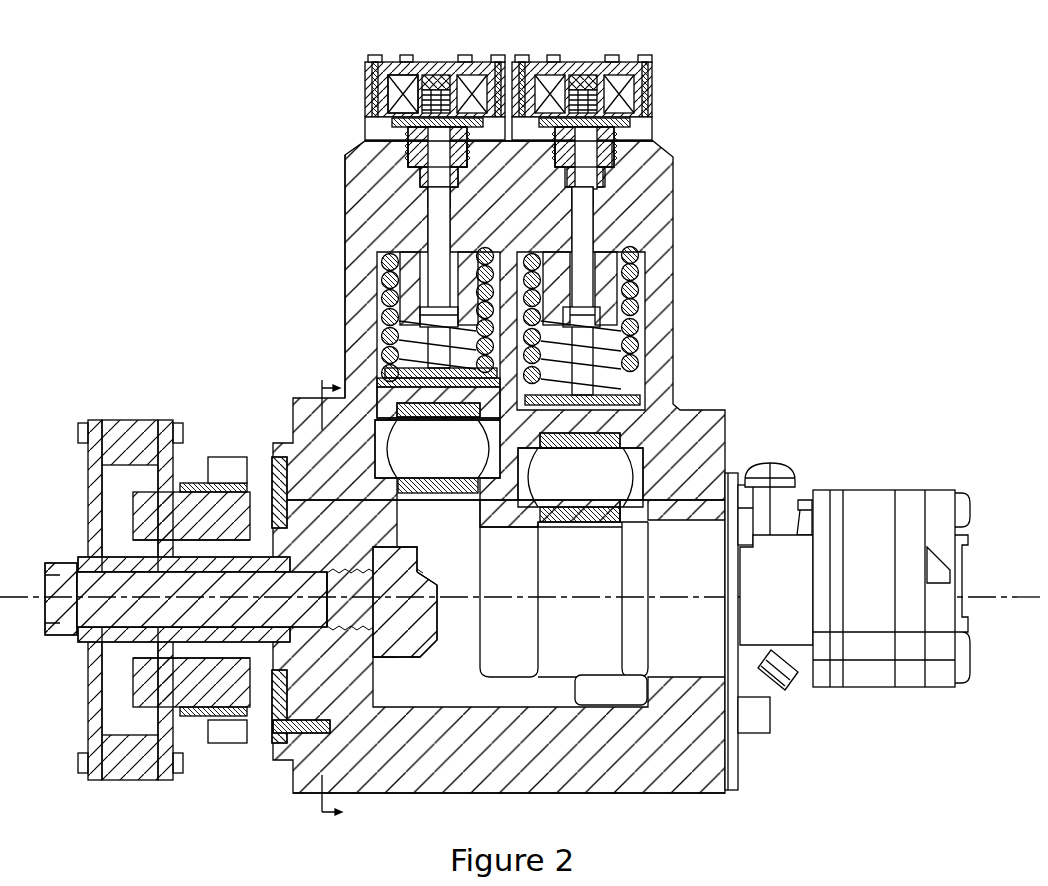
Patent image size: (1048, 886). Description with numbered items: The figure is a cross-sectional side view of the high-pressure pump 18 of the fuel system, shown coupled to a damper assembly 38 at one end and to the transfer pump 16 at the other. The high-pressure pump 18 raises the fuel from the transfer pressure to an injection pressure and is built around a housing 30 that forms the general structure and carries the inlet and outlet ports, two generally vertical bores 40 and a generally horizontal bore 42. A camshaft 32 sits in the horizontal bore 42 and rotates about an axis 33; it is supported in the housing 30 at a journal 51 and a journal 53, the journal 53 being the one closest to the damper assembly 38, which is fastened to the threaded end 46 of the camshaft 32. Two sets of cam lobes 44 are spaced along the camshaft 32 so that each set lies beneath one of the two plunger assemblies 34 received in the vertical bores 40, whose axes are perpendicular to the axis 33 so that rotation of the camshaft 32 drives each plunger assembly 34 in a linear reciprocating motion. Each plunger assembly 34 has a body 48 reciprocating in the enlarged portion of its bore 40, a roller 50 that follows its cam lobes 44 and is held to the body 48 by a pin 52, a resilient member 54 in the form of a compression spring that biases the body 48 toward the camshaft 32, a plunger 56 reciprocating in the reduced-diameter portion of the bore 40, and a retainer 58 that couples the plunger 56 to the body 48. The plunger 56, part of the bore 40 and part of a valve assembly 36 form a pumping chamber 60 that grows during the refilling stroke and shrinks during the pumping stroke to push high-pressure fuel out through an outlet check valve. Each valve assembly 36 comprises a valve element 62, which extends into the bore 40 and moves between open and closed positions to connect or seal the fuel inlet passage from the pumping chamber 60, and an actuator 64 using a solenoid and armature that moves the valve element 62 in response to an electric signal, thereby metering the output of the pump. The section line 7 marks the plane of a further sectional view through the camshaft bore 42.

The section line 7 is at (323, 600).
The transfer pump 16 is at (873, 490).
The high-pressure pump 18 is at (271, 120).
The housing 30 is at (725, 428).
The camshaft 32 is at (510, 677).
The axis 33 is at (1016, 597).
The plunger assemblies 34 is at (392, 333).
The valve assemblies 36 is at (450, 62).
The damper assembly 38 is at (130, 416).
The bores 40 is at (428, 240).
The bore 42 is at (780, 690).
The cam lobes 44 is at (435, 707).
The end 46 is at (256, 722).
The body 48 is at (378, 386).
The roller 50 is at (700, 412).
The journal 51 is at (672, 710).
The pin 52 is at (688, 442).
The journal 53 is at (360, 707).
The resilient member 54 is at (632, 290).
The plunger 56 is at (618, 258).
The retainer 58 is at (642, 386).
The pumping chamber 60 is at (430, 197).
The valve element 62 is at (428, 188).
The actuator 64 is at (392, 85).